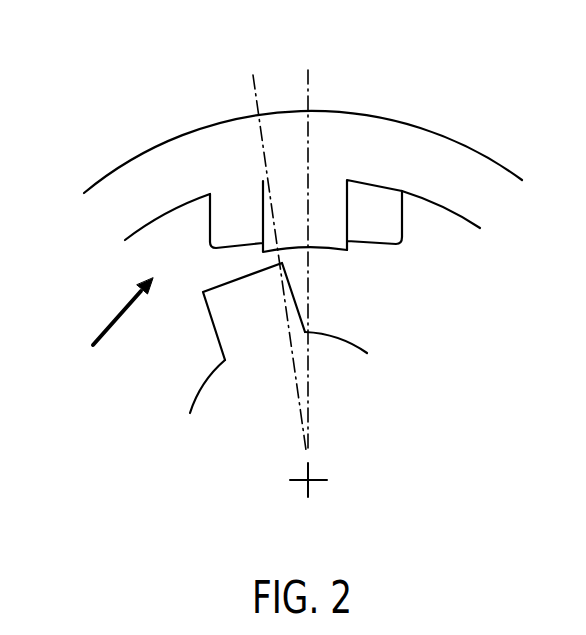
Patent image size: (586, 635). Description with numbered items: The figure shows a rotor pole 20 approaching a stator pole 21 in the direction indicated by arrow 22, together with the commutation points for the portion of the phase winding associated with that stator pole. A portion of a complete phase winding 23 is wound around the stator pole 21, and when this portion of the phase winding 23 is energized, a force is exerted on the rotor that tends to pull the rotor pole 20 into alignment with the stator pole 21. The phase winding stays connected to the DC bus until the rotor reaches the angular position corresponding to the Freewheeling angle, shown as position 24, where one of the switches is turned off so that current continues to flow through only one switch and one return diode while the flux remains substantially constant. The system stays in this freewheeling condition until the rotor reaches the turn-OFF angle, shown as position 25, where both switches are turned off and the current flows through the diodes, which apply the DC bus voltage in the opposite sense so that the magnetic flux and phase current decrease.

The rotor pole 20 is at (302, 292).
The stator pole 21 is at (335, 202).
The arrow 22 is at (110, 313).
The phase winding 23 is at (382, 208).
The Freewheeling angle position 24 is at (253, 98).
The turn-OFF angle position 25 is at (310, 97).